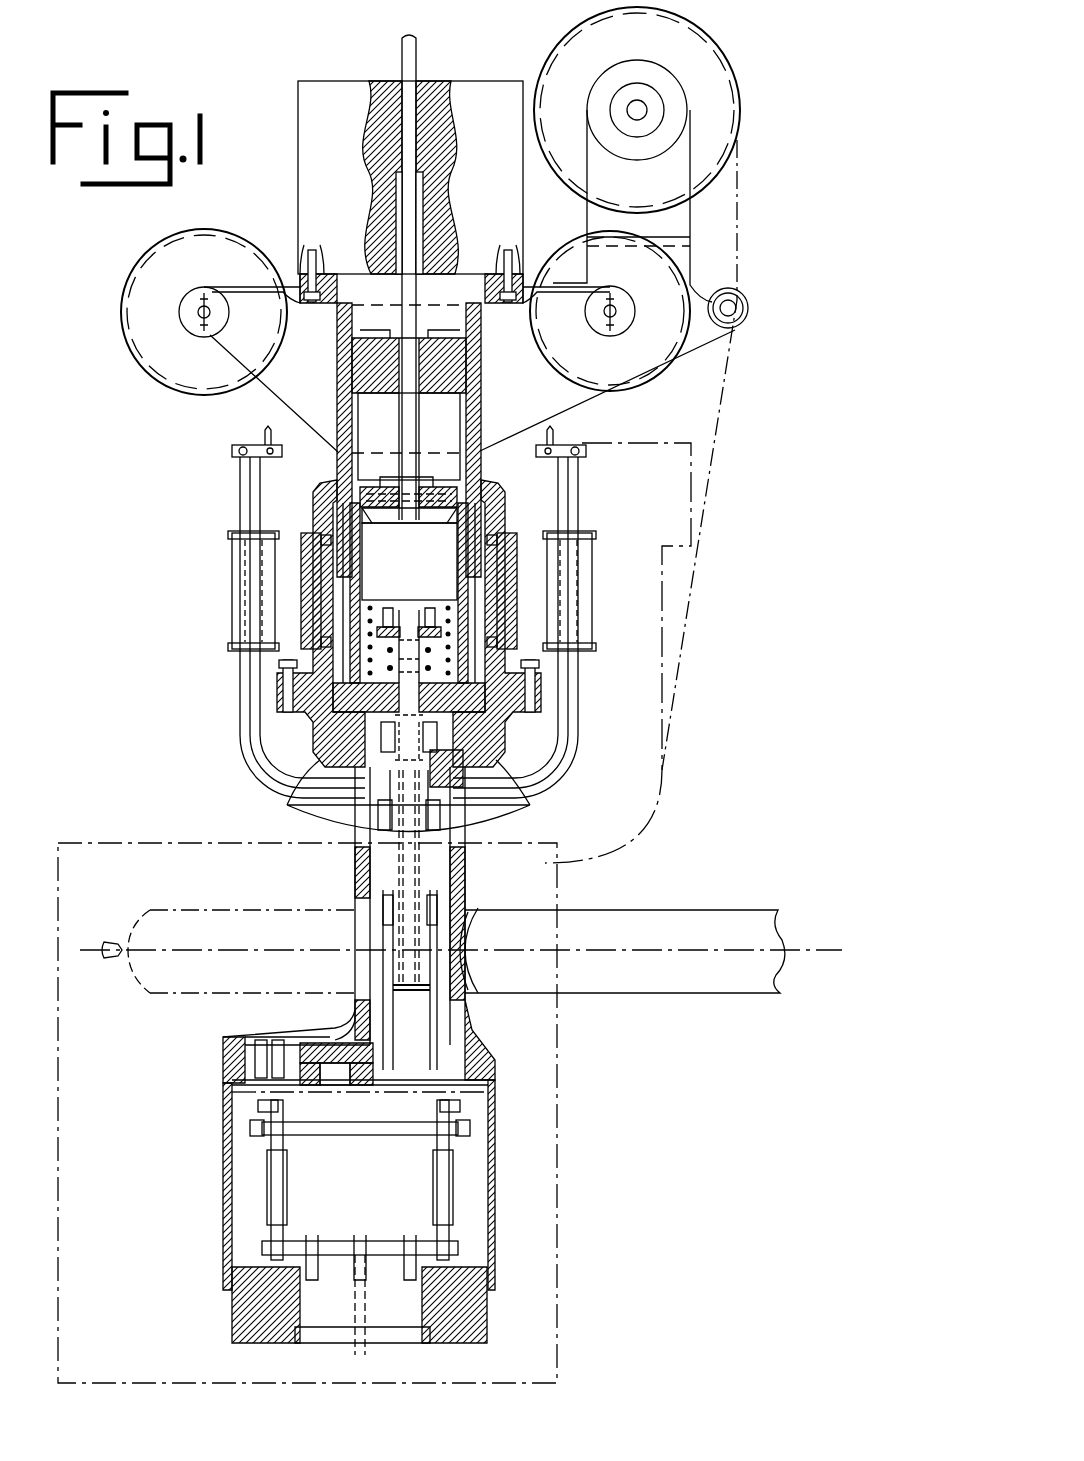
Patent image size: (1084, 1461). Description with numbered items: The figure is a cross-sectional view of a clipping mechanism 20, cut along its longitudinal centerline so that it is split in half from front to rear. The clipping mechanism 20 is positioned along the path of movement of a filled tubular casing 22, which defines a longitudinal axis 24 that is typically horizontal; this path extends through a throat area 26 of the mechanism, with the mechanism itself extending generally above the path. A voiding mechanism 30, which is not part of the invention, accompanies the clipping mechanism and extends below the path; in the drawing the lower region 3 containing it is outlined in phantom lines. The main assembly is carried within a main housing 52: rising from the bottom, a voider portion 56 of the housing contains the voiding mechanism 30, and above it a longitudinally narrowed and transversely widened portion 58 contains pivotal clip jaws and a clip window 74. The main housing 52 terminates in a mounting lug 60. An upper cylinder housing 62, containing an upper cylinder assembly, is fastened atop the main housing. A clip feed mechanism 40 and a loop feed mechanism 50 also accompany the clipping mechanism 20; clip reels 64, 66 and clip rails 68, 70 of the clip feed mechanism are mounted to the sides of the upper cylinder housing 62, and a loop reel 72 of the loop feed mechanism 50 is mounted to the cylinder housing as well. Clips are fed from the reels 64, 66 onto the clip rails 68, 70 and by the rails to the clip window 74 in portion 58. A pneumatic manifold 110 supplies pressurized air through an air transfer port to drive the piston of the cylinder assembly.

The pneumatic manifold 110 is at (318, 104).
The loop reel 72 is at (722, 76).
The clip reel 64 is at (148, 374).
The clip reel 66 is at (665, 375).
The loop feed mechanism 50 is at (752, 323).
The clip rail 68 is at (248, 478).
The clip feed mechanism 40 is at (242, 498).
The clip rail 70 is at (570, 492).
The upper cylinder housing 62 is at (313, 507).
The clipping mechanism 20 is at (196, 664).
The main housing 52 is at (314, 735).
The mounting lug 60 is at (321, 749).
The clip window 74 is at (431, 822).
The longitudinally narrowed and transversely widened portion 58 is at (352, 862).
The throat area 26 is at (457, 902).
The filled tubular casing 22 is at (672, 908).
The longitudinal axis 24 is at (820, 948).
The voiding mechanism 30 is at (483, 1047).
The lower housing boundary 3 is at (560, 1135).
The voider portion 56 is at (497, 1220).